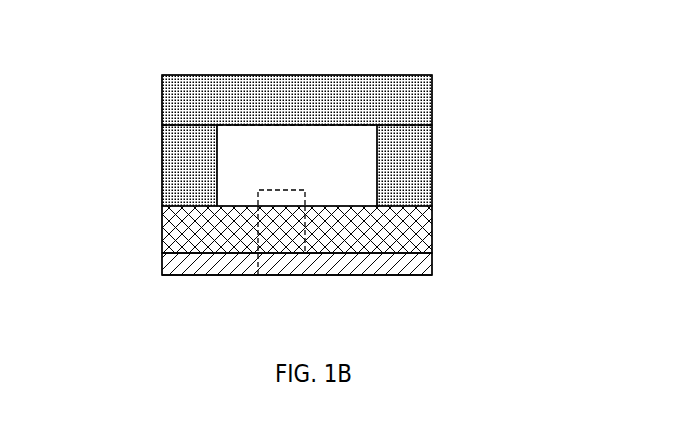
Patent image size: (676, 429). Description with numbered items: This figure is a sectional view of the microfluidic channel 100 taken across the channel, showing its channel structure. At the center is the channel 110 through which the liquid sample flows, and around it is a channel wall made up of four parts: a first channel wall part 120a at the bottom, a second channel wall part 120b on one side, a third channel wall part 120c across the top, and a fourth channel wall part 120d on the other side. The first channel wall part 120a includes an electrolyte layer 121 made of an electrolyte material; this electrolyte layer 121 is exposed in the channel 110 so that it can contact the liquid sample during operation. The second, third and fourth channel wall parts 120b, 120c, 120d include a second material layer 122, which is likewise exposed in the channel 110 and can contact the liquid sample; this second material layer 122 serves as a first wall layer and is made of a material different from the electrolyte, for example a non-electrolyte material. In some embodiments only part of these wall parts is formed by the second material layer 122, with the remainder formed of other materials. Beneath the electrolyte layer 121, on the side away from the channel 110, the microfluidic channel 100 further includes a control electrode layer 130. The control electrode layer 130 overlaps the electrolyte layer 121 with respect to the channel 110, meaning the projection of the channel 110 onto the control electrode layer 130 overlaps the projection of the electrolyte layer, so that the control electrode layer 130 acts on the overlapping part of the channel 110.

The microfluidic channel 100 is at (148, 66).
The channel 110 is at (357, 180).
The first channel wall part 120a is at (374, 266).
The second channel wall part 120b is at (415, 190).
The third channel wall part 120c is at (357, 97).
The fourth channel wall part 120d is at (198, 163).
The electrolyte layer 121 is at (432, 238).
The second material layer 122 is at (432, 95).
The control electrode layer 130 is at (432, 263).